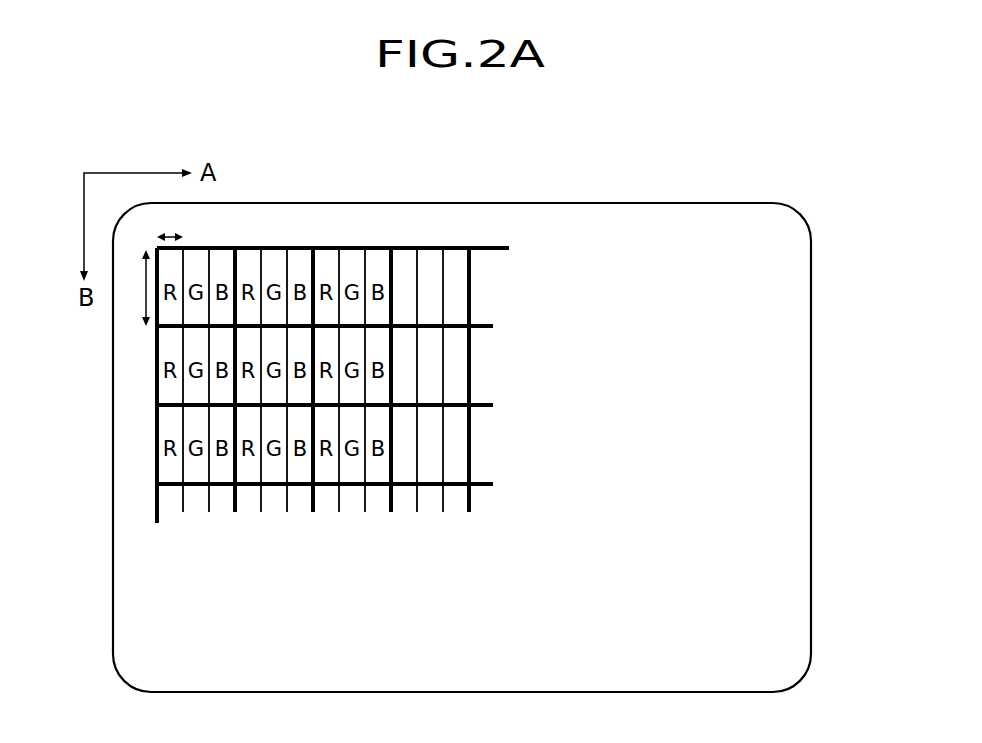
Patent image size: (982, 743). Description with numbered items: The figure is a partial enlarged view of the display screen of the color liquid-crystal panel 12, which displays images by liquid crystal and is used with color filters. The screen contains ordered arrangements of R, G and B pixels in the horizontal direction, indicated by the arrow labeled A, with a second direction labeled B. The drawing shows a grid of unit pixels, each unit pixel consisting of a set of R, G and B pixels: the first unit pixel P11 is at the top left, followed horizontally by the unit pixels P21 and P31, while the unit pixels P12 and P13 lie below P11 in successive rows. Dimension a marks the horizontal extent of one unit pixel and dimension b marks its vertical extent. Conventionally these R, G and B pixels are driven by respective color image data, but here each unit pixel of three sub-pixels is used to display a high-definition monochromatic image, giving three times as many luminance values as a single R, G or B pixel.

The color liquid-crystal panel 12 is at (549, 194).
The pixel (first column, first row) P11 is at (197, 256).
The pixel (second column, first row) P21 is at (272, 256).
The pixel (third column, first row) P31 is at (345, 258).
The pixel (first column, second row) P12 is at (162, 389).
The pixel (first column, third row) P13 is at (162, 471).
The pixel pitch in direction A a is at (164, 233).
The pixel pitch in direction B b is at (139, 288).